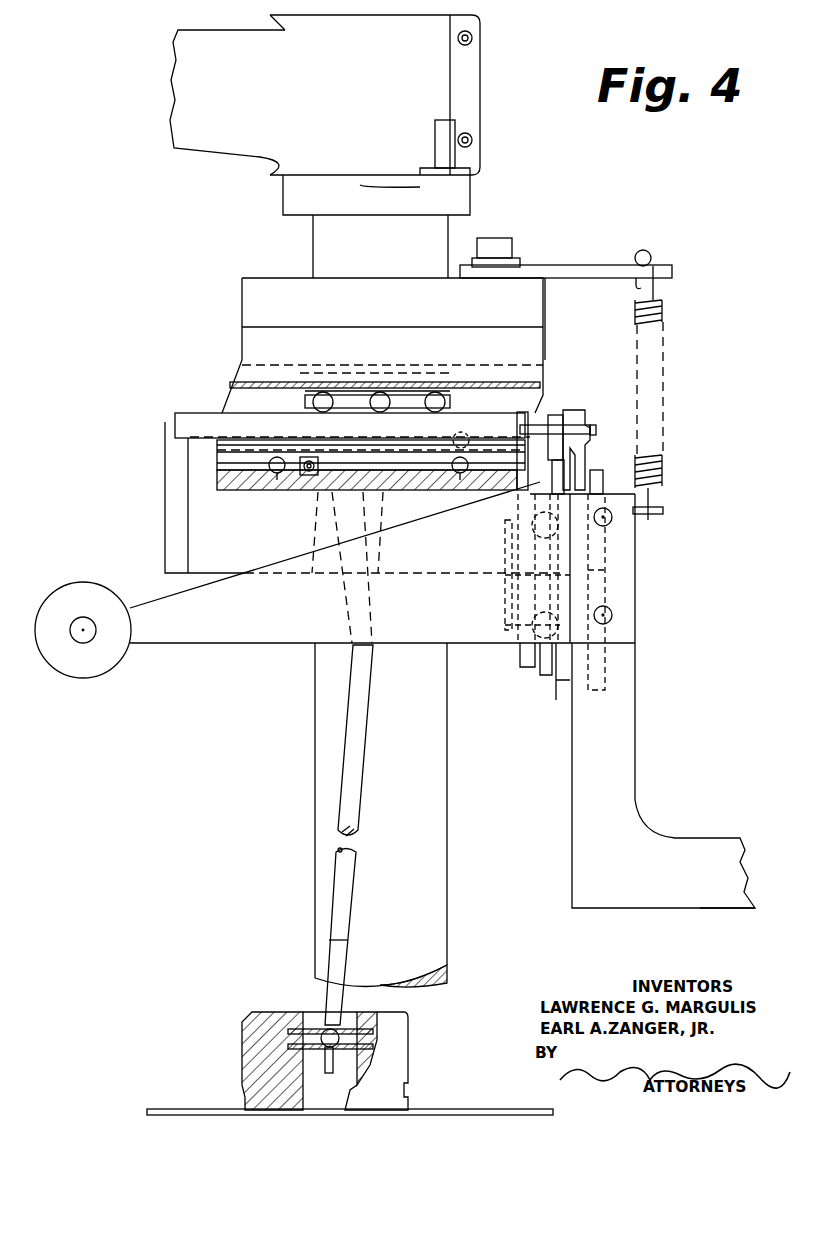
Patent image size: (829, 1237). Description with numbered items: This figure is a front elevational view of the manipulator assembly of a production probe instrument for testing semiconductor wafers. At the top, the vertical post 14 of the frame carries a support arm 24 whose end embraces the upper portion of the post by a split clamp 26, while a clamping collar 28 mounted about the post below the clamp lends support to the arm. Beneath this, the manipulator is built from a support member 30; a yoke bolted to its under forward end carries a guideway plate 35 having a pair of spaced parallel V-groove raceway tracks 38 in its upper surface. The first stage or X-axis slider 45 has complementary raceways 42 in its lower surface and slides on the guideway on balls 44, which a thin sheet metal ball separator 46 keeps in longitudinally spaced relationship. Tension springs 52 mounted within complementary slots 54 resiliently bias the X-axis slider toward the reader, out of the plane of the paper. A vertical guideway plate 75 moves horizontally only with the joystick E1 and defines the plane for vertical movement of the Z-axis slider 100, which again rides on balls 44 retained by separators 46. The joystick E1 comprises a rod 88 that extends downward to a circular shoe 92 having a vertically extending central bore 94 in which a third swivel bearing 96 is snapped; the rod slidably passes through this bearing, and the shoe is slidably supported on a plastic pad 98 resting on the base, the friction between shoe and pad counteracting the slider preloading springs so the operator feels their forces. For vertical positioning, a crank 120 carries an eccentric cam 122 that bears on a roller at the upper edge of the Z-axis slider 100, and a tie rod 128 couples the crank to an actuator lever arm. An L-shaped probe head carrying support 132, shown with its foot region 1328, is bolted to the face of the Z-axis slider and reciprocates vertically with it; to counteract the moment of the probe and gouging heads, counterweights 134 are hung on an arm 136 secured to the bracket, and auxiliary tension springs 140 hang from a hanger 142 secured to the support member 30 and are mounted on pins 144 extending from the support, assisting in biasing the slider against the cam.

The vertical post 14 is at (313, 250).
The support arm 24 is at (227, 138).
The split clamp 26 is at (478, 85).
The clamping collar 28 is at (460, 190).
The support member 30 is at (385, 292).
The guideway plate 35 is at (217, 482).
The raceway tracks 38 is at (275, 474).
The raceways 42 is at (283, 462).
The balls 44 is at (290, 458).
The X-axis slider 45 is at (225, 460).
The ball separator 46 is at (545, 673).
The tension springs 52 is at (309, 476).
The slots 54 is at (320, 460).
The vertical guideway plate 75 is at (520, 660).
The rod 88 is at (346, 900).
The circular shoe 92 is at (252, 1020).
The central bore 94 is at (328, 1104).
The swivel bearing 96 is at (343, 1030).
The pad 98 is at (183, 1110).
The Z-axis slider 100 is at (562, 682).
The crank 120 is at (575, 418).
The cam 122 is at (553, 420).
The tie rod 128 is at (640, 590).
The probe head carrying support 132 is at (622, 722).
The frame foot 1328 is at (710, 905).
The counterweights 134 is at (60, 605).
The arm 136 is at (252, 643).
The auxiliary tension springs 140 is at (662, 315).
The hanger 142 is at (570, 272).
The pins 144 is at (663, 510).
The joystick E1 is at (383, 790).